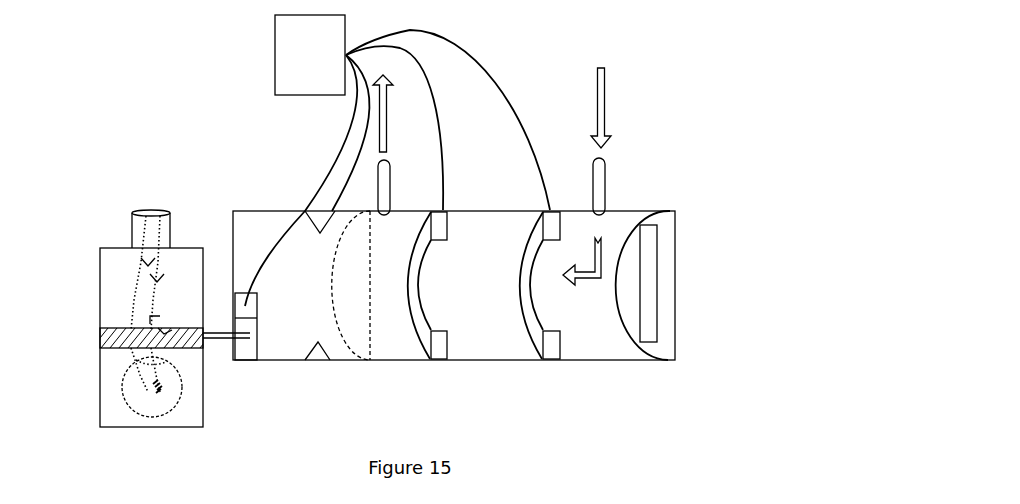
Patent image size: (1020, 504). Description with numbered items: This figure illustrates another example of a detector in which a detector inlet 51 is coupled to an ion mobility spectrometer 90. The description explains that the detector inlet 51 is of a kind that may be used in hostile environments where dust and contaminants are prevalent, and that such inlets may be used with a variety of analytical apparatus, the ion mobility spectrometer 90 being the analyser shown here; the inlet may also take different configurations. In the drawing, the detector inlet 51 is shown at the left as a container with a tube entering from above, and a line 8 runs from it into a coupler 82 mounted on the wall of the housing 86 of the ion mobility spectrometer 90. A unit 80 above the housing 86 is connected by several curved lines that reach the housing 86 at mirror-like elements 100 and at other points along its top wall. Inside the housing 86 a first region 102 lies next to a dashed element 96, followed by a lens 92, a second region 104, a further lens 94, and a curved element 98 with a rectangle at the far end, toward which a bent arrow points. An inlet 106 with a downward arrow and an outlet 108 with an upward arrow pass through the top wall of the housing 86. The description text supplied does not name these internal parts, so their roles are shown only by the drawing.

The optical fibre 8 is at (242, 335).
The detector inlet 51 is at (81, 252).
The light source / control unit 80 is at (310, 55).
The fibre coupler 82 is at (241, 306).
The housing 86 is at (491, 362).
The ion mobility spectrometer 90 is at (479, 233).
The first lens 92 is at (435, 360).
The second lens 94 is at (546, 360).
The filter 96 is at (362, 362).
The detector 98 is at (643, 268).
The mirror 100 is at (319, 232).
The first chamber 102 is at (303, 281).
The second chamber 104 is at (483, 287).
The inlet 106 is at (605, 195).
The outlet 108 is at (384, 198).